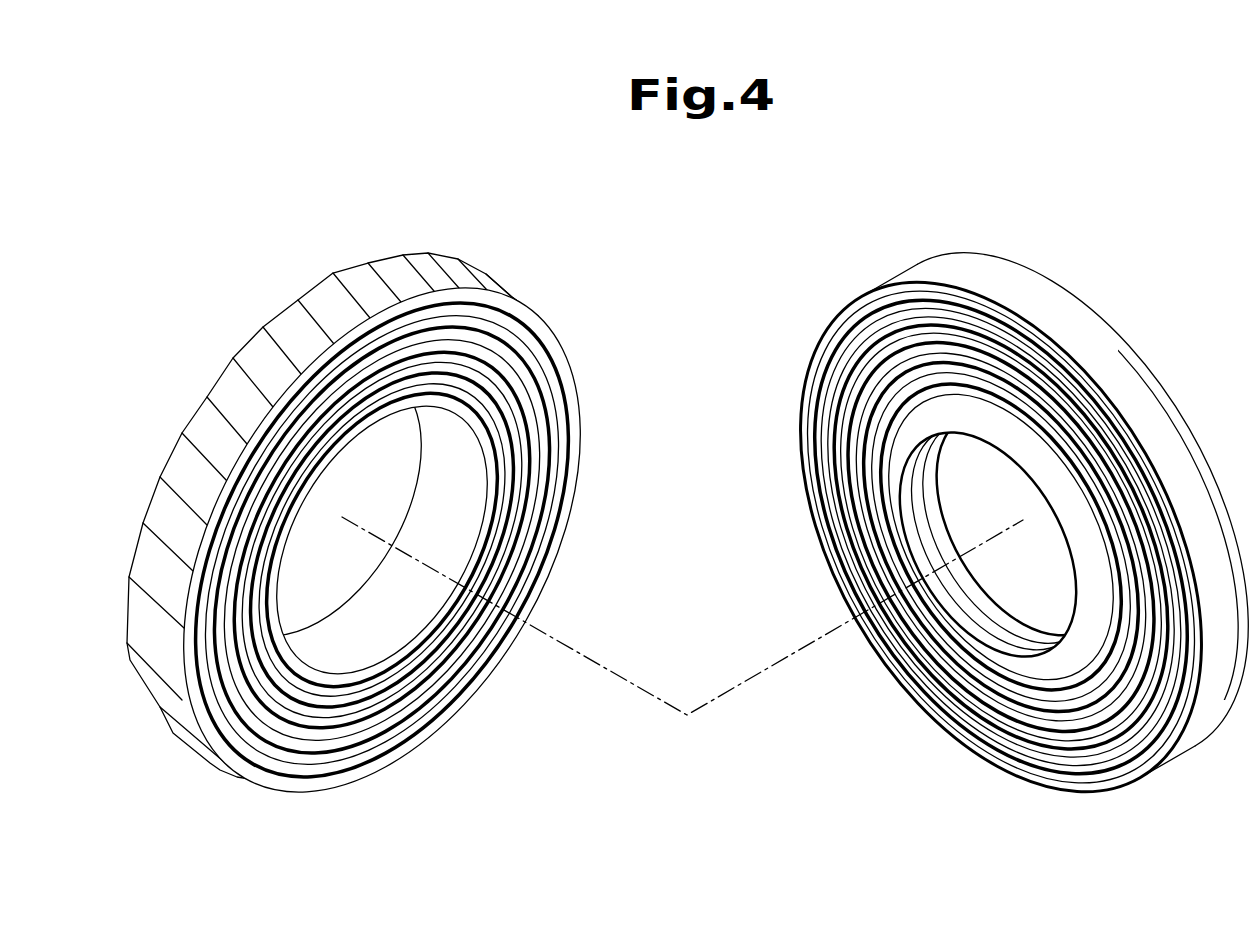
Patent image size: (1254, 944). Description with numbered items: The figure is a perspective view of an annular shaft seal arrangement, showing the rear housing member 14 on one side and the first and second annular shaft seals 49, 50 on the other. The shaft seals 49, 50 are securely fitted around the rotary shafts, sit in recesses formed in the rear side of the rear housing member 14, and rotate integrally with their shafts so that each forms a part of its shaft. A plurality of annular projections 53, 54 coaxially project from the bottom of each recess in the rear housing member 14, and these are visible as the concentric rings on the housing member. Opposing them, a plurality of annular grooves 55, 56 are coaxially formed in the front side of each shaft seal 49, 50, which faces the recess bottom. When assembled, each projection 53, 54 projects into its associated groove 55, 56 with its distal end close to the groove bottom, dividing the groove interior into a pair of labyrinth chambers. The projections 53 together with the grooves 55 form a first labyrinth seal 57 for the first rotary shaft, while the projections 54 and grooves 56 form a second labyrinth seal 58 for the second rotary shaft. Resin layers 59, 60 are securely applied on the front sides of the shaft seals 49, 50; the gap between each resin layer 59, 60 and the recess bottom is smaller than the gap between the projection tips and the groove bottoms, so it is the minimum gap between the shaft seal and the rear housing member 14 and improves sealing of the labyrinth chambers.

The rear housing member 14 is at (449, 539).
The first annular shaft seal 49 is at (977, 531).
The second annular shaft seal 50 is at (1021, 509).
The annular projections 53 is at (517, 348).
The annular projections 54 is at (381, 535).
The annular grooves 55 is at (853, 345).
The annular grooves 56 is at (867, 315).
The first labyrinth seal 57 is at (457, 531).
The second labyrinth seal 58 is at (977, 540).
The resin layer 59 is at (1028, 757).
The resin layer 60 is at (1031, 795).